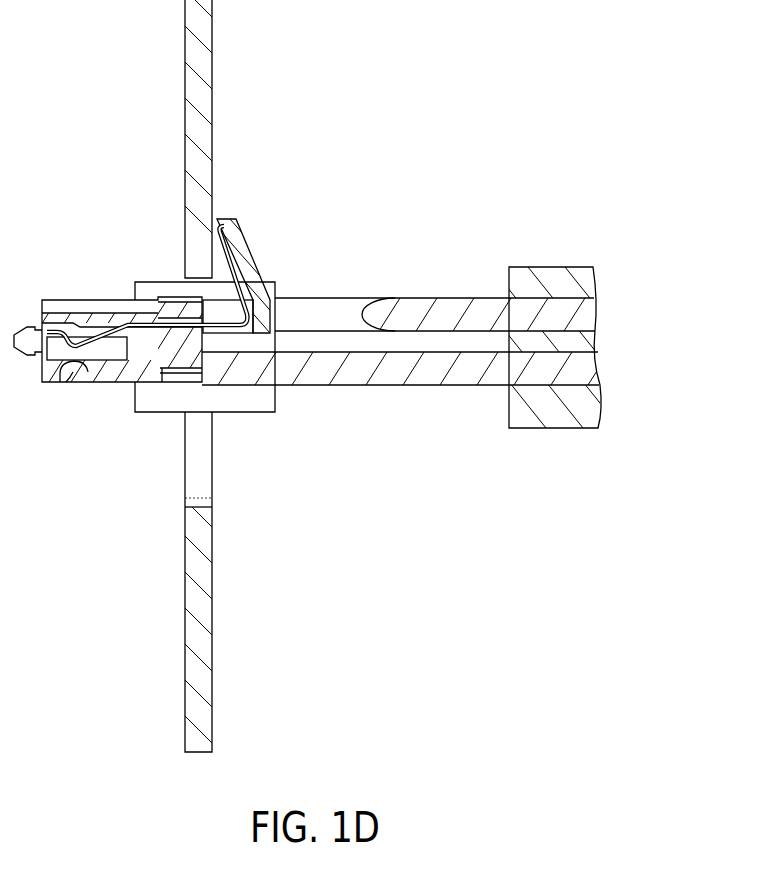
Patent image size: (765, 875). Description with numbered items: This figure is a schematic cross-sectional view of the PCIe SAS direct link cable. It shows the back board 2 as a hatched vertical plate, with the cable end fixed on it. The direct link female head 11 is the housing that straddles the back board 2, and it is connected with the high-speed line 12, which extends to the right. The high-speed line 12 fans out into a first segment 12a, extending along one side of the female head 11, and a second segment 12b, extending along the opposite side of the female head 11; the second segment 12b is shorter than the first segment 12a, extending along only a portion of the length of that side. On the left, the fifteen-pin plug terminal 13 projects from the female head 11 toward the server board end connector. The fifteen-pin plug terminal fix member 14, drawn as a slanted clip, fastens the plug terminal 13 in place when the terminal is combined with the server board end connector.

The back board 2 is at (200, 38).
The direct link female head 11 is at (148, 402).
The high-speed line 12 is at (540, 266).
The first segment 12a is at (415, 377).
The second segment 12b is at (420, 308).
The 15pin plug terminal 13 is at (128, 325).
The 15pin plug terminal fix member 14 is at (246, 256).